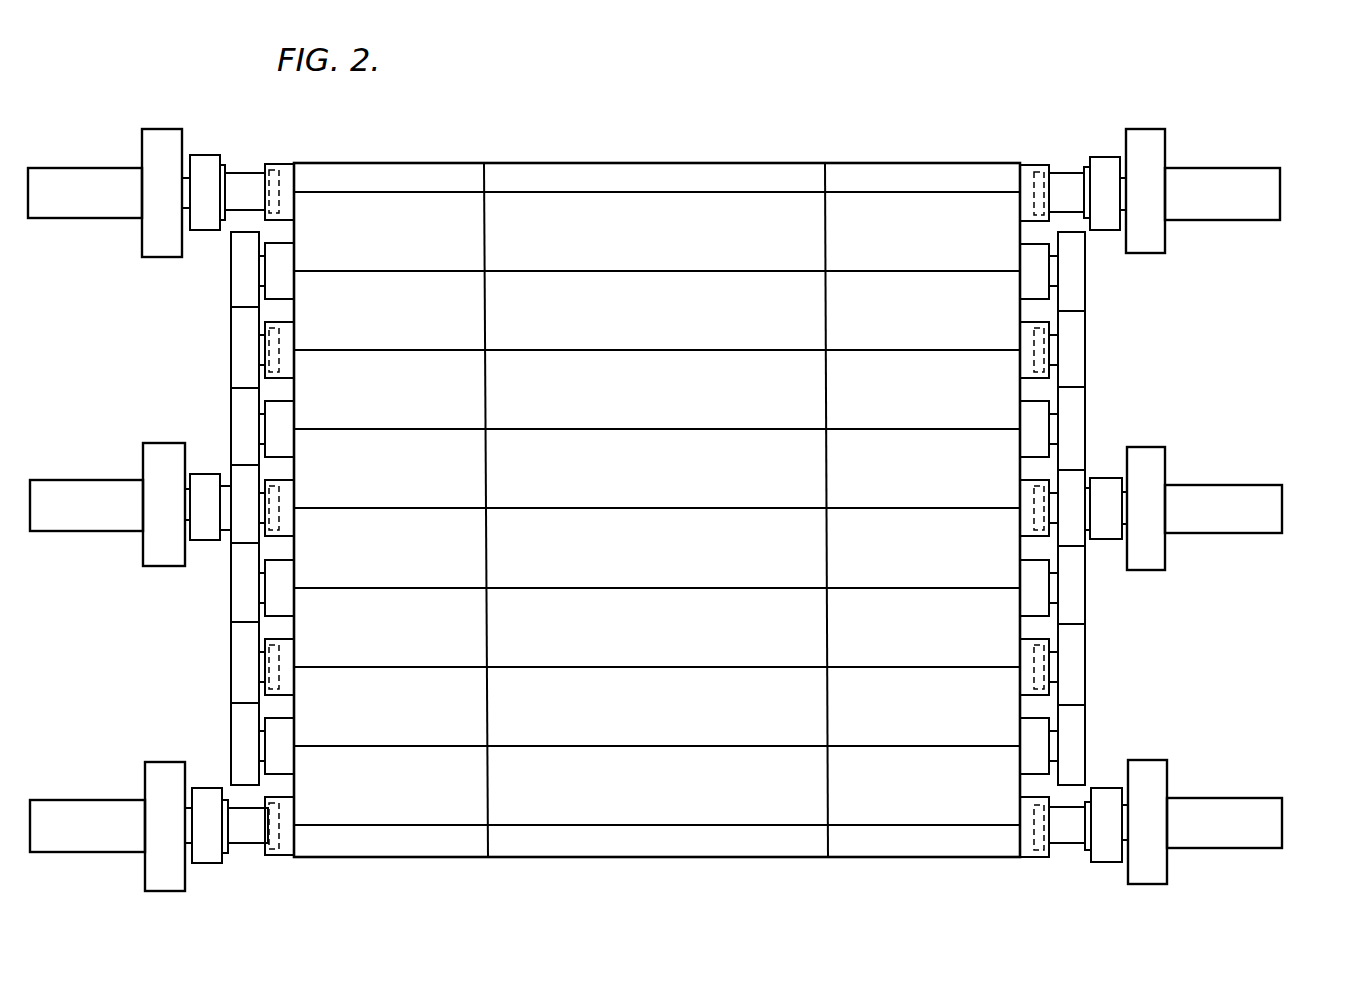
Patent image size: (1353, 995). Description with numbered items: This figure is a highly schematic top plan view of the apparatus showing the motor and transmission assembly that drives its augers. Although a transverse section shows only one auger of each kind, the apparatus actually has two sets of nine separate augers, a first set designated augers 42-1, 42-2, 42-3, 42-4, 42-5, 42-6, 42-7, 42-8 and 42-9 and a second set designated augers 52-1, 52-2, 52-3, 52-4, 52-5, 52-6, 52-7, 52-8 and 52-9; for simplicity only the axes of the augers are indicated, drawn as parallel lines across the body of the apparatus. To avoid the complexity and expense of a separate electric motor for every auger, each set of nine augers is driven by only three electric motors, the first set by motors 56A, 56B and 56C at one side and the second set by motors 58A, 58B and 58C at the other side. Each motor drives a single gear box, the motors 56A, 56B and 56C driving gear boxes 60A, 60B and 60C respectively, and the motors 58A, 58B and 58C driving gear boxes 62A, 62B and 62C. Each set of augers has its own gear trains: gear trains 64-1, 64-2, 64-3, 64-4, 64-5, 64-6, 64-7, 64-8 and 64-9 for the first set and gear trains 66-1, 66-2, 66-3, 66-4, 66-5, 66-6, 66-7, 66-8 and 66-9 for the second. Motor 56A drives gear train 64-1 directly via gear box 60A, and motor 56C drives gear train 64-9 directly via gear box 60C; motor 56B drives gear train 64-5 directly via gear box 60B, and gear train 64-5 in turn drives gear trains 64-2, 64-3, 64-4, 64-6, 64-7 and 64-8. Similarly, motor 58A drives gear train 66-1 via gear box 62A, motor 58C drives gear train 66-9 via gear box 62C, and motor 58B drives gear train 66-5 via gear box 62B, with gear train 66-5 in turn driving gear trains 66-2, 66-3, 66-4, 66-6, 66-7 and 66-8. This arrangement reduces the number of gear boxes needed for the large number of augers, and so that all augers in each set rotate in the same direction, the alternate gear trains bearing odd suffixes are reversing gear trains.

The auger 42-1 is at (561, 815).
The auger 42-2 is at (561, 736).
The auger 42-3 is at (560, 657).
The auger 42-4 is at (560, 578).
The auger 42-5 is at (560, 498).
The auger 42-6 is at (560, 419).
The auger 42-7 is at (560, 340).
The auger 42-8 is at (560, 261).
The auger 42-9 is at (560, 182).
The auger 52-1 is at (924, 815).
The auger 52-2 is at (924, 736).
The auger 52-3 is at (923, 657).
The auger 52-4 is at (923, 578).
The auger 52-5 is at (923, 498).
The auger 52-6 is at (923, 419).
The auger 52-7 is at (923, 340).
The auger 52-8 is at (923, 261).
The auger 52-9 is at (923, 182).
The gear train 64-1 is at (268, 843).
The gear train 64-2 is at (240, 735).
The gear train 64-3 is at (248, 650).
The gear train 64-4 is at (248, 585).
The gear train 64-5 is at (248, 522).
The gear train 64-6 is at (240, 410).
The gear train 64-7 is at (241, 344).
The gear train 64-8 is at (239, 277).
The gear train 64-9 is at (278, 180).
The gear train 66-1 is at (1033, 858).
The gear train 66-2 is at (1070, 730).
The gear train 66-3 is at (1070, 668).
The gear train 66-4 is at (1070, 597).
The gear train 66-5 is at (1075, 530).
The gear train 66-6 is at (1077, 421).
The gear train 66-7 is at (1077, 358).
The gear train 66-8 is at (1072, 289).
The gear train 66-9 is at (1043, 200).
The electric motor 56A is at (48, 835).
The electric motor 56B is at (90, 517).
The electric motor 56C is at (95, 205).
The electric motor 58A is at (1195, 833).
The electric motor 58B is at (1193, 521).
The electric motor 58C is at (1198, 202).
The gear box 60A is at (205, 832).
The gear box 60B is at (212, 503).
The gear box 60C is at (207, 200).
The gear box 62A is at (1097, 805).
The gear box 62B is at (1100, 500).
The gear box 62C is at (1103, 165).